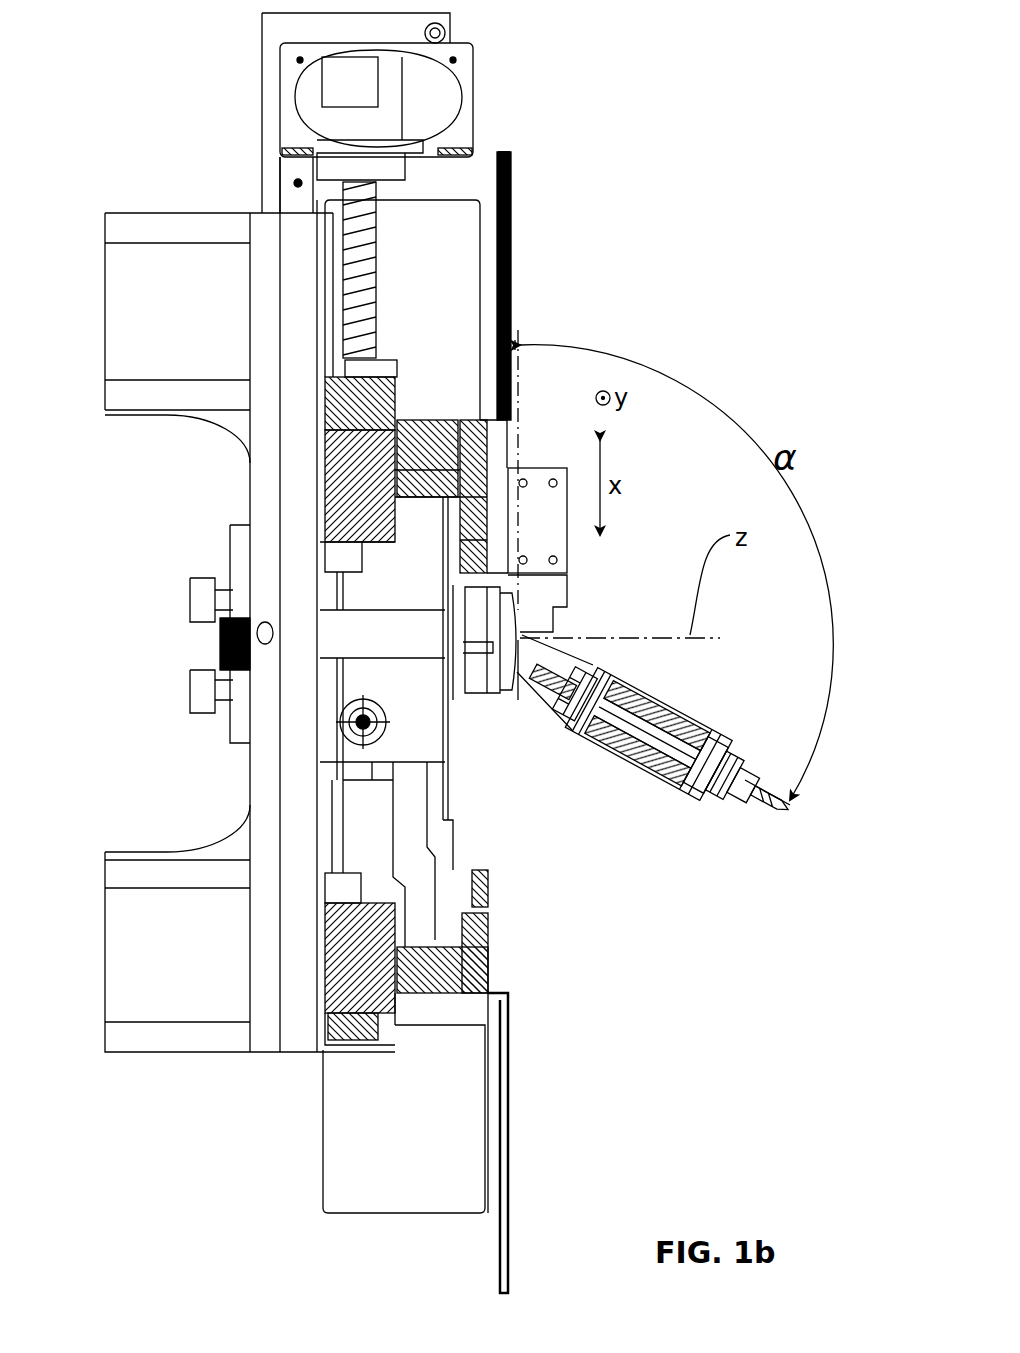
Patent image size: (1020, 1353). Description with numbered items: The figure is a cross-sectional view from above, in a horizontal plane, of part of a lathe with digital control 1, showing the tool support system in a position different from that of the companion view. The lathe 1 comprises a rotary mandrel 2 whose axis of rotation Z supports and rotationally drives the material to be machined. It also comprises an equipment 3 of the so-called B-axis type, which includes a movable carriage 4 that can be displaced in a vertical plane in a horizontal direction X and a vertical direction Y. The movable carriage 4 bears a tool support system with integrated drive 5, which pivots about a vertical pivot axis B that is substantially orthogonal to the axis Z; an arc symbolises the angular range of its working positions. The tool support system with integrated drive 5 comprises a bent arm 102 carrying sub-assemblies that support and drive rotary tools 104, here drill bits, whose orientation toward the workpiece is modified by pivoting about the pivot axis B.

The lathe with digital control 1 is at (185, 135).
The rotary mandrel 2 is at (497, 697).
The equipment 3 is at (655, 793).
The movable carriage 4 is at (468, 420).
The tool support system with integrated drive 5 is at (632, 775).
The bent arm 102 is at (557, 707).
The rotary tool 104 is at (522, 657).
The pivot axis B is at (518, 703).